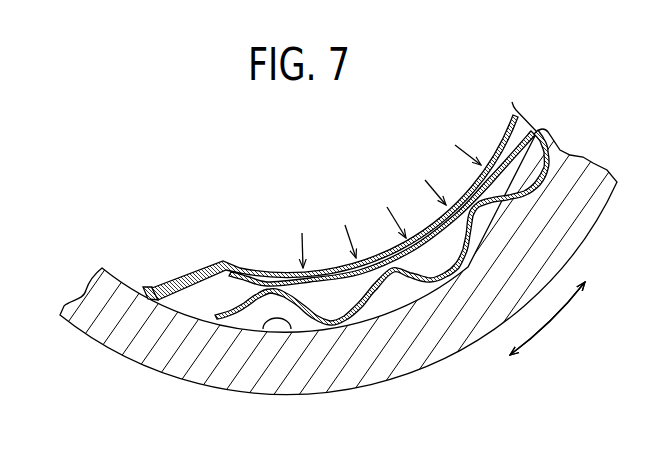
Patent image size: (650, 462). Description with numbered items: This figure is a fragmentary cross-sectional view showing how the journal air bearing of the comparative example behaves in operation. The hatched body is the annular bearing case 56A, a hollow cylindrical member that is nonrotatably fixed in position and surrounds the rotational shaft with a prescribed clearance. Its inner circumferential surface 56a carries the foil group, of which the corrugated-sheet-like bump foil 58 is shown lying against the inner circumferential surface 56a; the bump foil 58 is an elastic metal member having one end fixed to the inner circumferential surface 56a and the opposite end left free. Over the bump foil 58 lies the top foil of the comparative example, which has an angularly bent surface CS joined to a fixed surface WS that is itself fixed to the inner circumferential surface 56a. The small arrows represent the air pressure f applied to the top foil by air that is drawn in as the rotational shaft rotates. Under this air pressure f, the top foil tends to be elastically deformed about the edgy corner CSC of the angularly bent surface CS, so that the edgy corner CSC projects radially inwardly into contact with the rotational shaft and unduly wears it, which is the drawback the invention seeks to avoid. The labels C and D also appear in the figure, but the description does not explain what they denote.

The bearing case 56A is at (104, 348).
The inner circumferential surface 56a is at (293, 330).
The bump foil 58 is at (330, 329).
The angularly bent surface CS is at (196, 272).
The edgy corner CSC is at (228, 268).
The fixed surface WS is at (150, 286).
The air pressure f is at (391, 206).
The direction C is at (558, 307).
The direction D is at (537, 328).